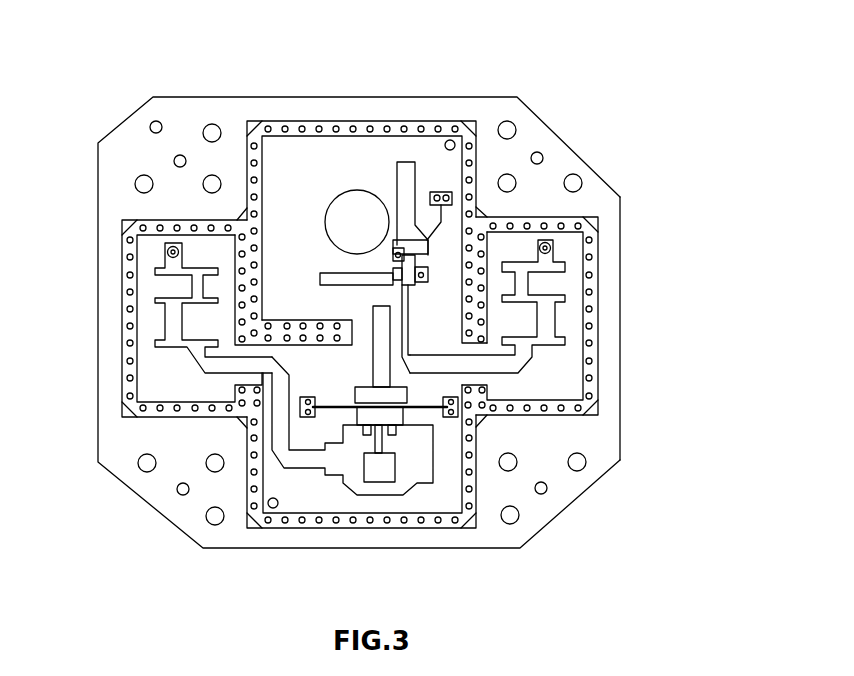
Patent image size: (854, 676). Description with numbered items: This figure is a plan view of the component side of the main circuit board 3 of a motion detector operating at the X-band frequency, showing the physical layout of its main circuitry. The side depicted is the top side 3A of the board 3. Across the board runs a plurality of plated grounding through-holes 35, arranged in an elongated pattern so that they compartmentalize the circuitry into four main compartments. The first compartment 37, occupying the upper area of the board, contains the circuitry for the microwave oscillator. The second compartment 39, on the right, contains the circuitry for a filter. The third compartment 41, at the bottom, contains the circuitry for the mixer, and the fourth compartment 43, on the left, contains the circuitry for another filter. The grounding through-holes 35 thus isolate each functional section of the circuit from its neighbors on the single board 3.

The circuit board 3 is at (548, 122).
The top side 3A is at (619, 195).
The plated grounding through-holes 35 is at (284, 130).
The first compartment 37 is at (382, 152).
The second compartment 39 is at (570, 384).
The third compartment 41 is at (443, 500).
The fourth compartment 43 is at (150, 367).